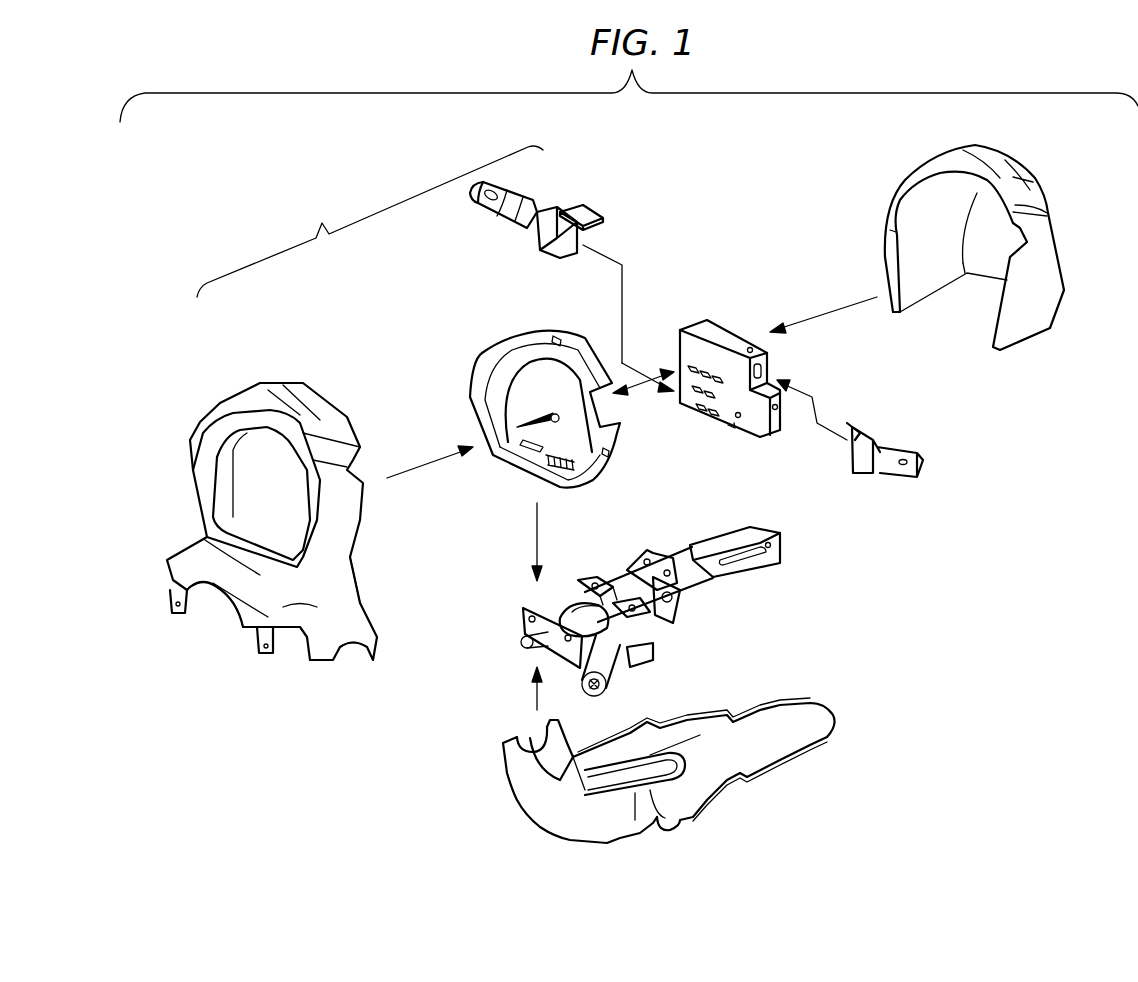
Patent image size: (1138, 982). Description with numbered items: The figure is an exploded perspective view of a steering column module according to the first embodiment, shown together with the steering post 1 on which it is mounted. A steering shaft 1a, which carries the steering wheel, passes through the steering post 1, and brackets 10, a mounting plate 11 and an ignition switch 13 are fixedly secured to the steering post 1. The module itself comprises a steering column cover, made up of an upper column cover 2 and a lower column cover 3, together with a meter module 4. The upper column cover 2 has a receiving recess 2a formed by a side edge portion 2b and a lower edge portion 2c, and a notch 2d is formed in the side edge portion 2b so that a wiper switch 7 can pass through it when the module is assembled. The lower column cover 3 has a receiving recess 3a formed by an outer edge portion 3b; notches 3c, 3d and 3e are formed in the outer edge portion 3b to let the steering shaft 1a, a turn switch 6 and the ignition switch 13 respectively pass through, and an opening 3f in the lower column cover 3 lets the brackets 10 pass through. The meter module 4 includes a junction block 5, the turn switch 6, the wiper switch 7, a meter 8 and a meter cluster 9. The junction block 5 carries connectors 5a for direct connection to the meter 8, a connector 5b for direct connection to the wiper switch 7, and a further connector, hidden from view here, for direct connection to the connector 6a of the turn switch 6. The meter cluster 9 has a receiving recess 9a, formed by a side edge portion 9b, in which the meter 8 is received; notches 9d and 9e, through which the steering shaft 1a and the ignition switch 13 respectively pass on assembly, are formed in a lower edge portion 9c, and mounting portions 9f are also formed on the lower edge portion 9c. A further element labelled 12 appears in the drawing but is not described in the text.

The steering post 1 is at (760, 577).
The steering shaft 1a is at (520, 643).
The upper column cover 2 is at (1010, 172).
The receiving recess 2a is at (965, 293).
The side edge portion 2b is at (900, 184).
The lower edge portion 2c is at (1027, 337).
The notch 2d is at (1028, 231).
The lower column cover 3 is at (503, 787).
The receiving recess 3a is at (547, 763).
The outer edge portion 3b is at (593, 797).
The notch 3c is at (537, 813).
The notch 3d is at (533, 740).
The notch 3e is at (670, 830).
The opening 3f is at (653, 773).
The meter module 4 is at (370, 221).
The junction block 5 is at (738, 331).
The connectors 5a is at (713, 407).
The connector 5b is at (770, 367).
The turn switch 6 is at (540, 207).
The connector 6a is at (587, 207).
The wiper switch 7 is at (880, 433).
The meter 8 is at (483, 353).
The meter cluster 9 is at (273, 387).
The receiving recess 9a is at (247, 475).
The side edge portion 9b is at (360, 527).
The lower edge portion 9c is at (240, 627).
The notch 9d is at (217, 585).
The notch 9e is at (347, 657).
The mounting portions 9f is at (177, 612).
The brackets 10 is at (643, 640).
The mounting plate 11 is at (523, 607).
The connector 12 is at (730, 523).
The ignition switch 13 is at (613, 680).